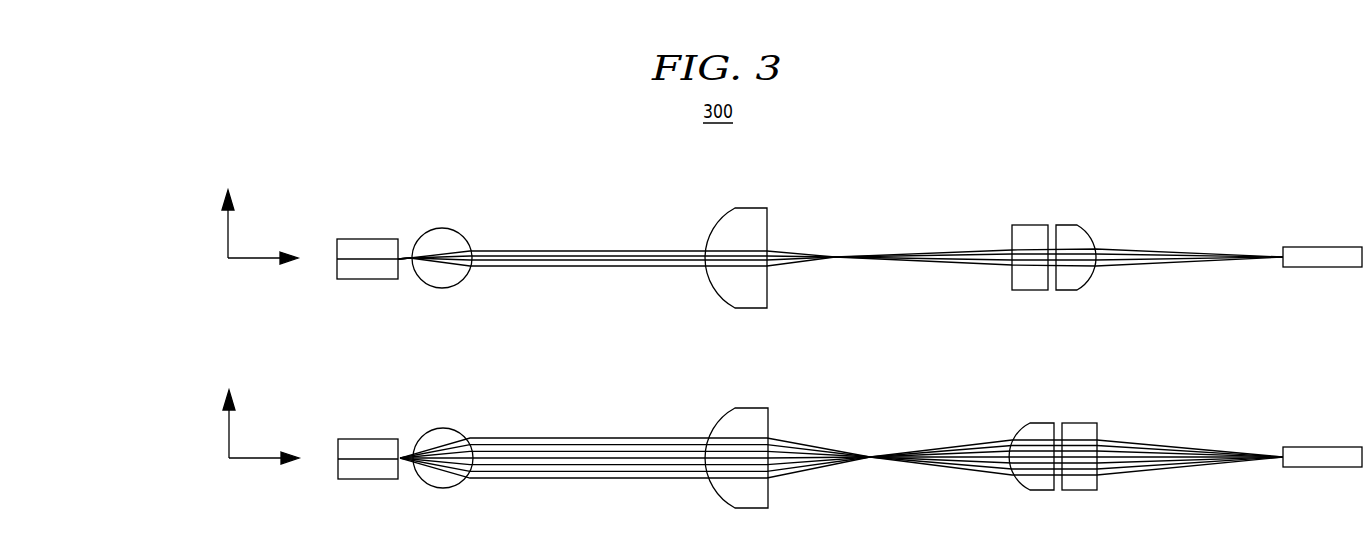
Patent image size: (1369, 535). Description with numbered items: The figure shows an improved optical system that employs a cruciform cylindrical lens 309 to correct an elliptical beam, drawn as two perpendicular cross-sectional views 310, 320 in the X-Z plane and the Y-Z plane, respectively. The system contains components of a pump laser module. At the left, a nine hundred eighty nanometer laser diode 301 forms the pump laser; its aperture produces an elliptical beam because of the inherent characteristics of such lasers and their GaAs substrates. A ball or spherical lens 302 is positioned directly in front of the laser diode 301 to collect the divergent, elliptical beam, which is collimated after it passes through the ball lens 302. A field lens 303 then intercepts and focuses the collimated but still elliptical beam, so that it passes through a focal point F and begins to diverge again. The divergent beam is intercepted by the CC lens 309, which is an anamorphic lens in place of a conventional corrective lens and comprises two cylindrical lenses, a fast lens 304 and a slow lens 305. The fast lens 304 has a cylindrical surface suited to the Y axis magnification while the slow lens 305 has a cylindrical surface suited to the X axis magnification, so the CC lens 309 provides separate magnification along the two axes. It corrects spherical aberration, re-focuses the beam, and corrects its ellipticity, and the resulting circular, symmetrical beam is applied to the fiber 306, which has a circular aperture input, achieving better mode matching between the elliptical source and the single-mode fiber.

The laser diode 301 is at (367, 279).
The ball lens 302 is at (442, 288).
The field lens 303 is at (750, 308).
The fast lens 304 is at (1032, 290).
The slow lens 305 is at (1068, 290).
The fiber 306 is at (1322, 267).
The cruciform cylindrical lens 309 is at (1112, 196).
The X-Z plane view 310 is at (180, 256).
The Y-Z plane view 320 is at (180, 448).